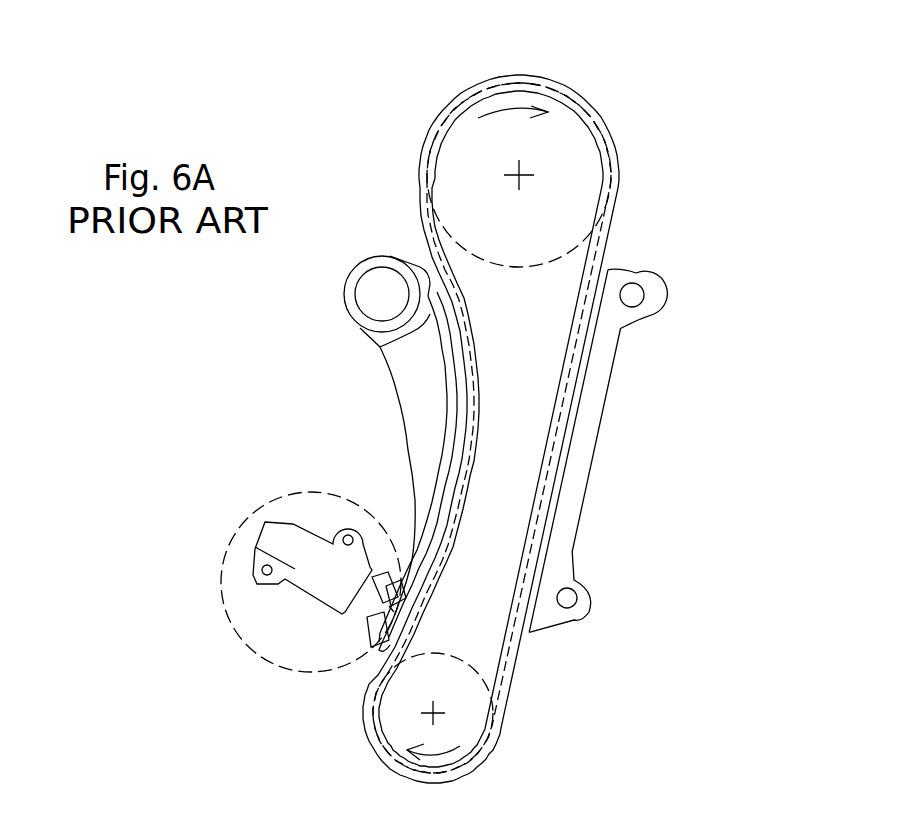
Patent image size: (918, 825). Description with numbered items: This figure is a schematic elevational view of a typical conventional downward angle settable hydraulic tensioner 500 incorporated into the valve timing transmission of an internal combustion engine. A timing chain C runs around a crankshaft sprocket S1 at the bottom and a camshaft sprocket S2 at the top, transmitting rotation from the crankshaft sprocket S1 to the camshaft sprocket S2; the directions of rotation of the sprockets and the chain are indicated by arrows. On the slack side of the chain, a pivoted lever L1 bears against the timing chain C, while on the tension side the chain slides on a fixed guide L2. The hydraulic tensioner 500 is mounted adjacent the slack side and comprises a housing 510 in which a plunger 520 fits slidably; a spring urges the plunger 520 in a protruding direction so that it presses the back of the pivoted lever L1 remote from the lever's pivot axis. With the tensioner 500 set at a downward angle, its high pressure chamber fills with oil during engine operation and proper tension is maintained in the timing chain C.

The timing chain C is at (617, 107).
The camshaft sprocket S2 is at (580, 182).
The crankshaft sprocket S1 is at (464, 723).
The pivoted lever L1 is at (395, 393).
The fixed guide L2 is at (603, 412).
The conventional hydraulic tensioner 500 is at (256, 582).
The housing 510 is at (297, 585).
The plunger 520 is at (347, 615).